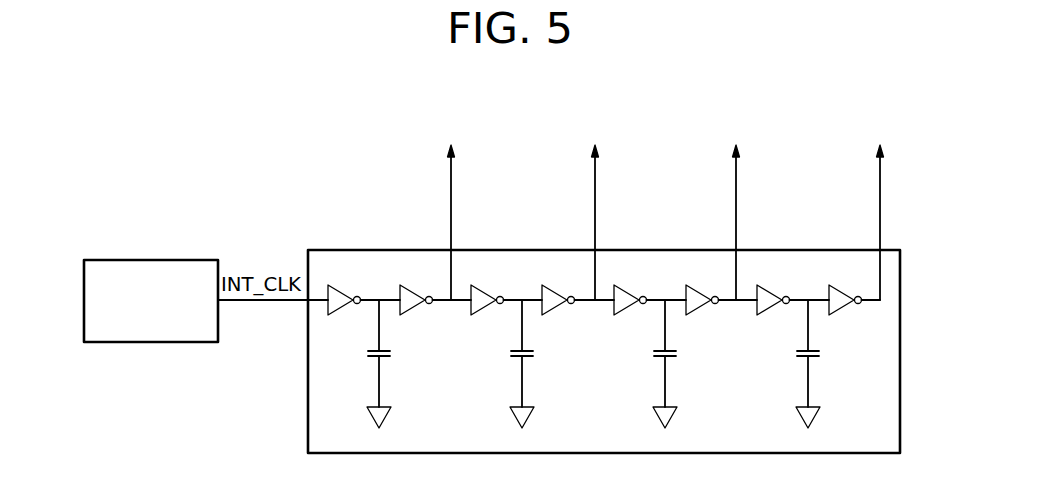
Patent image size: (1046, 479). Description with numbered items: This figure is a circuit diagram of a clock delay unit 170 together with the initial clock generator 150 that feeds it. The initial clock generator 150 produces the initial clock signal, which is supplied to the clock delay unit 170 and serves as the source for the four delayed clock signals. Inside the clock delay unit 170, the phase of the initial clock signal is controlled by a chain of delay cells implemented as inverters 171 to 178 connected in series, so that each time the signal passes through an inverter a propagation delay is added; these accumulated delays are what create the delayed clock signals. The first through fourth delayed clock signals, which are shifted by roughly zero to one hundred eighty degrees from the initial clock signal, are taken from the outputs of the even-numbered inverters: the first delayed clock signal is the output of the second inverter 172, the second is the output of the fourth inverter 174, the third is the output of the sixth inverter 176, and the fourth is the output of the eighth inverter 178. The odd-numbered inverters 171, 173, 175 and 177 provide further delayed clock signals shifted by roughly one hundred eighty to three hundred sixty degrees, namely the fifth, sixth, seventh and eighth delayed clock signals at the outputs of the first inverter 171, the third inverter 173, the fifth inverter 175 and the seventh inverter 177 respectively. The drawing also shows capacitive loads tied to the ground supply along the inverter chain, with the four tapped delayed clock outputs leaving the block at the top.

The initial clock generator 150 is at (151, 260).
The clock delay unit 170 is at (308, 400).
The inverter 1 171 is at (345, 288).
The inverter 2 172 is at (417, 288).
The inverter 3 173 is at (488, 288).
The inverter 4 174 is at (559, 288).
The inverter 5 175 is at (631, 288).
The inverter 6 176 is at (703, 288).
The inverter 7 177 is at (774, 288).
The inverter 8 178 is at (846, 288).